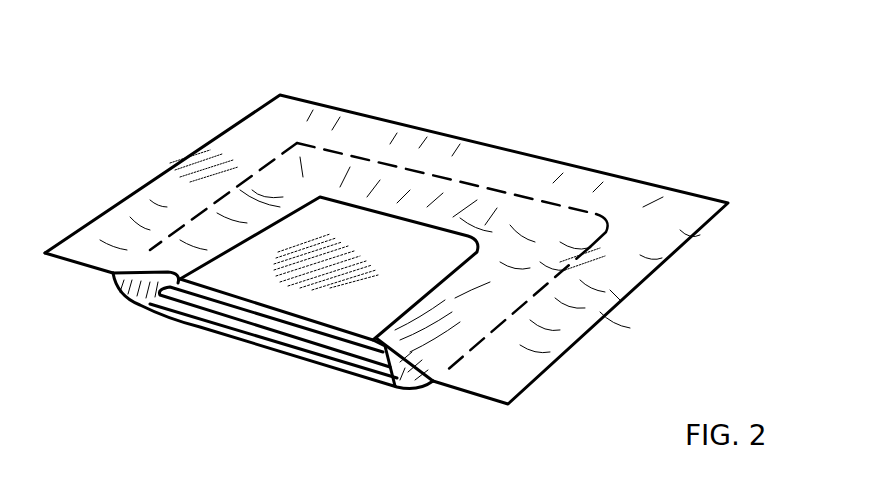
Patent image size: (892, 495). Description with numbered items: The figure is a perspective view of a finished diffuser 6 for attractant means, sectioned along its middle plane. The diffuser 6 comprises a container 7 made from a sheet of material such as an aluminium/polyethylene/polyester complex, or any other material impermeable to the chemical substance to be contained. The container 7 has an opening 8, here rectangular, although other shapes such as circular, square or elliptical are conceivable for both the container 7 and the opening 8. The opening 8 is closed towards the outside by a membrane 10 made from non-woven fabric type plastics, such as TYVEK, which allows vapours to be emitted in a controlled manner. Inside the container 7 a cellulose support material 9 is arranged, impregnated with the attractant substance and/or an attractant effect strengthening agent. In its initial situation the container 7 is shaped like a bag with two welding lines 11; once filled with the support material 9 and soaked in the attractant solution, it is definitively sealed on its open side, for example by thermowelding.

The diffuser 6 is at (599, 142).
The container 7 is at (430, 153).
The opening 8 is at (430, 292).
The cellulose support material 9 is at (313, 347).
The membrane 10 is at (315, 282).
The welding lines 11 is at (280, 153).